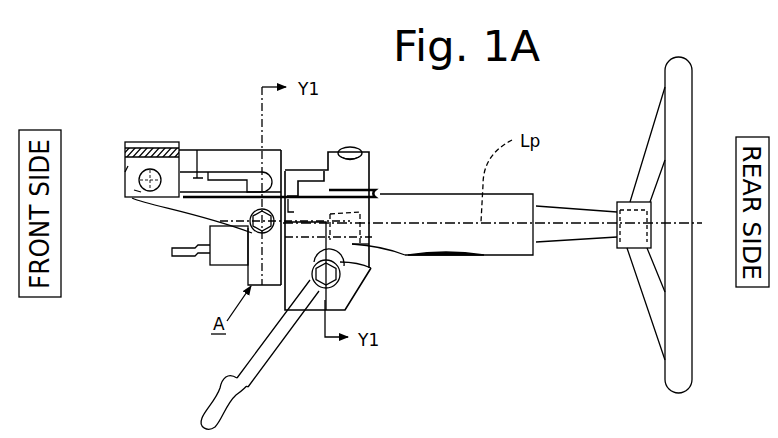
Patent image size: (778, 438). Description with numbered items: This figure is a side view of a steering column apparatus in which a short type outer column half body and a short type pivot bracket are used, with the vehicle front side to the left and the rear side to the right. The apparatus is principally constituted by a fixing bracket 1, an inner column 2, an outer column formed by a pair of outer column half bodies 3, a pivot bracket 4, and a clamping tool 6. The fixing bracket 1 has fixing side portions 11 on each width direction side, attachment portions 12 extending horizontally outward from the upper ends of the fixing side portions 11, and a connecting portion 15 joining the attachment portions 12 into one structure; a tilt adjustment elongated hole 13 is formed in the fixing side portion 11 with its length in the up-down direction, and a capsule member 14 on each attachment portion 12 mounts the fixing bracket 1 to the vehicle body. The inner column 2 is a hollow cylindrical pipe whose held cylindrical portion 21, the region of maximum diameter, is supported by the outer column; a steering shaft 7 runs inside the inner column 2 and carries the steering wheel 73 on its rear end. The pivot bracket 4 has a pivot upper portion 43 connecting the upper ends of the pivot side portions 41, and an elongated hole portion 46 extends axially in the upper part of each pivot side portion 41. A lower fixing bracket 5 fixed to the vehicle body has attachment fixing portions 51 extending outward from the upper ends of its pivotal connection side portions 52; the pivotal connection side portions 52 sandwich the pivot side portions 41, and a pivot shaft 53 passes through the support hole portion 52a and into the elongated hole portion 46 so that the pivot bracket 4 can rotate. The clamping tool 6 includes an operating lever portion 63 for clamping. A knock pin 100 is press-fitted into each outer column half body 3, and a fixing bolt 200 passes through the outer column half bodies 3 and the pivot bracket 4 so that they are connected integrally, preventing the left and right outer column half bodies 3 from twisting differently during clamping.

The fixing bracket 1 is at (374, 156).
The inner column 2 is at (495, 262).
The outer column half body 3 is at (265, 287).
The pivot bracket 4 is at (221, 146).
The lower fixing bracket 5 is at (156, 138).
The clamping tool 6 is at (290, 343).
The steering shaft 7 is at (566, 233).
The fixing side portion 11 is at (397, 253).
The attachment portion 12 is at (312, 184).
The tilt adjustment elongated hole 13 is at (371, 270).
The capsule member 14 is at (382, 188).
The connecting portion 15 is at (358, 150).
The held cylindrical portion 21 is at (232, 268).
The pivot side portion 41 is at (192, 207).
The pivot upper portion 43 is at (251, 149).
The elongated hole portion 46 is at (196, 176).
The attachment fixing portion 51 is at (135, 147).
The pivotal connection side portion 52 is at (130, 164).
The support hole portion 52a is at (152, 192).
The pivot shaft 53 is at (135, 189).
The operating lever portion 63 is at (263, 352).
The steering wheel 73 is at (675, 82).
The knock pin 100 is at (370, 210).
The fixing bolt 200 is at (256, 232).